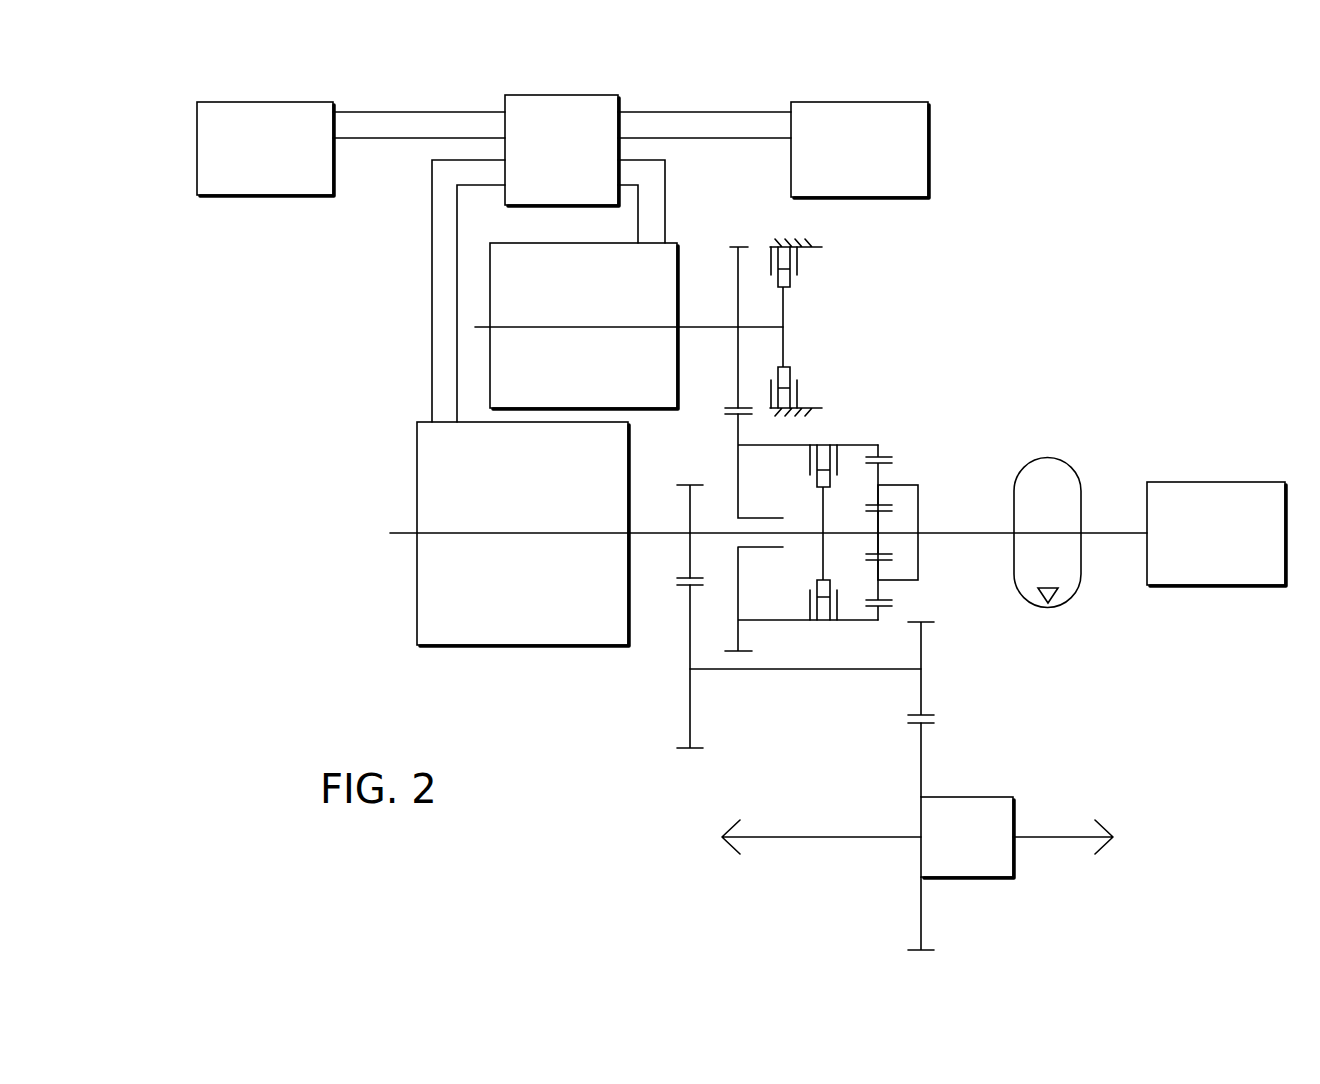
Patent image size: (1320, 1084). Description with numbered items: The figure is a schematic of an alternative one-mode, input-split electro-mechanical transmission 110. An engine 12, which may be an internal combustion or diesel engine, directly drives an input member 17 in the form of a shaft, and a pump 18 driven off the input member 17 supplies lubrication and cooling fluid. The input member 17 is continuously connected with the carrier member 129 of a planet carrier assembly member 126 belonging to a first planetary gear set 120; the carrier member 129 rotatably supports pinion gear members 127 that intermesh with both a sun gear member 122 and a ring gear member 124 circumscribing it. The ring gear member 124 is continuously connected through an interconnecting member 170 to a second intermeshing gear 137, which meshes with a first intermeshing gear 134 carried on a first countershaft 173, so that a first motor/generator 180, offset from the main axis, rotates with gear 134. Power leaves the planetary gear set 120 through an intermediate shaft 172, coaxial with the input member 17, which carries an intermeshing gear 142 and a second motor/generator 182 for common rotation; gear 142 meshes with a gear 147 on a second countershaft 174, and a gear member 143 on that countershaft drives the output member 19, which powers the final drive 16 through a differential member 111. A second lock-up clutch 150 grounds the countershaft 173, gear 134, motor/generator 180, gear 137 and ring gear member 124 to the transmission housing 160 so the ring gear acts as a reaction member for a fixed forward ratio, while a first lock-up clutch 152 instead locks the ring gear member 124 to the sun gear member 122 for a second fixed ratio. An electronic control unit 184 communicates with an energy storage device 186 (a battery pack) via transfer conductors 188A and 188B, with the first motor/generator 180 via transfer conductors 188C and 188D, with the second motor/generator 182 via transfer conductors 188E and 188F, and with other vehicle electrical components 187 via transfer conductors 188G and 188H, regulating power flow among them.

The electro-mechanical transmission 110 is at (194, 323).
The energy storage device 186 is at (195, 157).
The electronic control unit 184 is at (534, 206).
The other vehicle electrical components 187 is at (930, 159).
The transfer conductor 188A is at (408, 113).
The transfer conductor 188B is at (425, 139).
The transfer conductor 188C is at (638, 214).
The transfer conductor 188D is at (665, 212).
The transfer conductor 188E is at (431, 258).
The transfer conductor 188F is at (456, 281).
The transfer conductor 188G is at (706, 113).
The transfer conductor 188H is at (691, 139).
The first motor/generator 180 is at (680, 296).
The second motor/generator 182 is at (482, 646).
The first countershaft 173 is at (708, 328).
The first intermeshing gear 134 is at (738, 356).
The second intermeshing gear 137 is at (735, 421).
The transmission housing 160 is at (805, 246).
The C2 lock-up clutch 150 is at (814, 266).
The C1 lock-up clutch 152 is at (847, 457).
The interconnecting member 170 is at (790, 446).
The intermediate shaft 172 is at (710, 528).
The ring gear member 124 is at (881, 456).
The pinion gear members 127 is at (877, 478).
The planet carrier assembly member 126 is at (914, 477).
The carrier member 129 is at (899, 485).
The sun gear member 122 is at (882, 522).
The first planetary gear set 120 is at (937, 577).
The input member 17 is at (1113, 530).
The gear 147 is at (690, 690).
The intermeshing gear 142 is at (688, 559).
The second countershaft 174 is at (795, 670).
The gear member 143 is at (921, 689).
The output member 19 is at (921, 748).
The differential member 111 is at (980, 878).
The final drive 16 is at (820, 835).
The pump 18 is at (1056, 606).
The engine 12 is at (1250, 482).